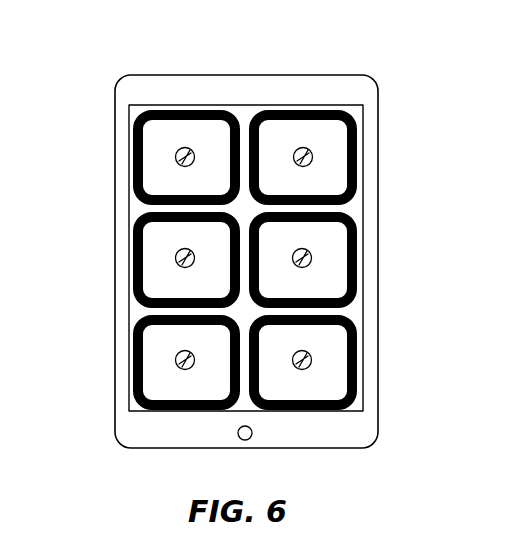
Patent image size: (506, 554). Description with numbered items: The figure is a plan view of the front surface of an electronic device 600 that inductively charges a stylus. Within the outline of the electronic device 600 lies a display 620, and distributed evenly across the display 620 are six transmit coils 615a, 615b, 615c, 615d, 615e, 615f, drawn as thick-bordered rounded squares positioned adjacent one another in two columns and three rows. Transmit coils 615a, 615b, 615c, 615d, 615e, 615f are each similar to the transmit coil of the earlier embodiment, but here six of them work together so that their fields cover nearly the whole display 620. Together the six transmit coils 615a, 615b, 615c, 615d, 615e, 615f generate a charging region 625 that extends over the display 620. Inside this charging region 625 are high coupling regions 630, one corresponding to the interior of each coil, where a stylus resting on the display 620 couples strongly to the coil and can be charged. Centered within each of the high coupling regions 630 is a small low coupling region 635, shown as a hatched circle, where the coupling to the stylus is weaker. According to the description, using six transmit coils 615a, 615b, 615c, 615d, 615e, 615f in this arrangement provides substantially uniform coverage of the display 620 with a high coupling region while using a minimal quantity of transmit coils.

The electronic device 600 is at (410, 68).
The transmit coil 615a is at (133, 130).
The transmit coil 615b is at (358, 148).
The transmit coil 615c is at (133, 248).
The transmit coil 615d is at (358, 246).
The transmit coil 615e is at (133, 348).
The transmit coil 615f is at (358, 345).
The display 620 is at (364, 108).
The charging region 625 is at (354, 208).
The high coupling region 630 is at (247, 214).
The low coupling region 635 is at (303, 147).